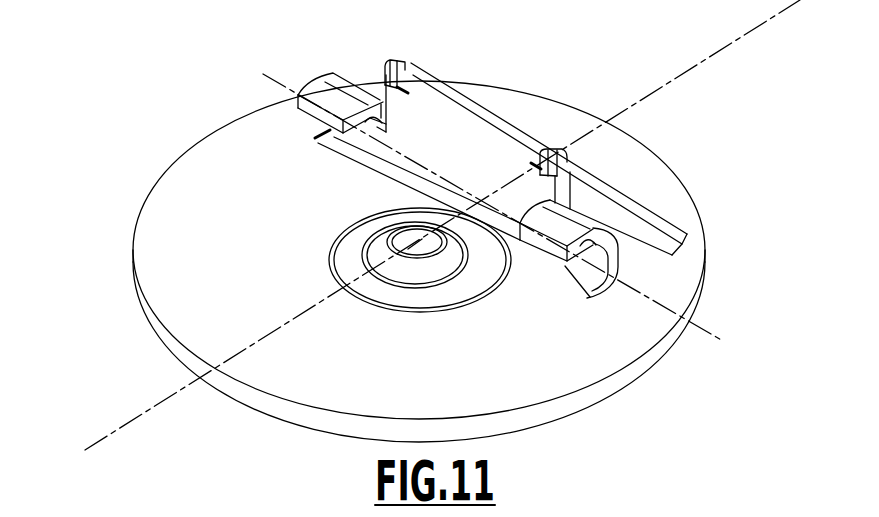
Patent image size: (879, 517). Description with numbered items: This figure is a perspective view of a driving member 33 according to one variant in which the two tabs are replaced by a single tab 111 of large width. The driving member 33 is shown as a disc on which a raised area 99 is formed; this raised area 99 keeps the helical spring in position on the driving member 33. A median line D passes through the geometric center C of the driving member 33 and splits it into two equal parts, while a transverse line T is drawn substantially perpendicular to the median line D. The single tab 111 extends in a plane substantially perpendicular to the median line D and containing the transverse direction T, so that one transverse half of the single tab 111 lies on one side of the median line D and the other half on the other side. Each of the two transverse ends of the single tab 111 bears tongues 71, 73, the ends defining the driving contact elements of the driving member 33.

The driving member 33 is at (85, 152).
The tongue 71 is at (332, 93).
The tongue 73 is at (403, 66).
The raised area 99 is at (462, 290).
The single tab 111 is at (600, 182).
The geometric center C is at (417, 242).
The median line D is at (739, 43).
The transverse line T is at (719, 338).